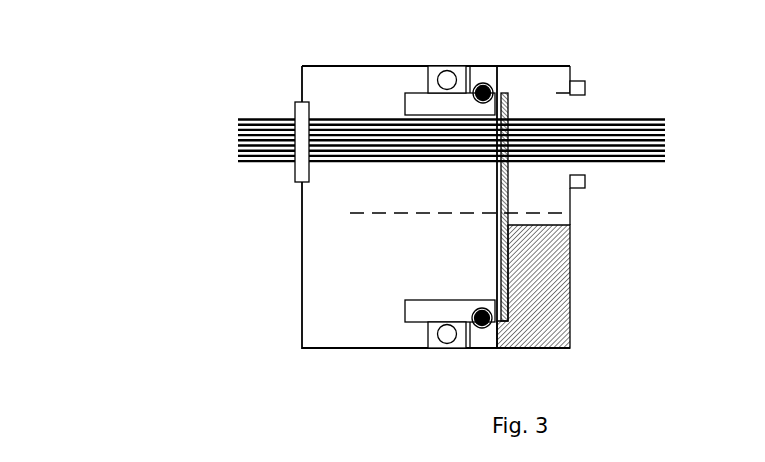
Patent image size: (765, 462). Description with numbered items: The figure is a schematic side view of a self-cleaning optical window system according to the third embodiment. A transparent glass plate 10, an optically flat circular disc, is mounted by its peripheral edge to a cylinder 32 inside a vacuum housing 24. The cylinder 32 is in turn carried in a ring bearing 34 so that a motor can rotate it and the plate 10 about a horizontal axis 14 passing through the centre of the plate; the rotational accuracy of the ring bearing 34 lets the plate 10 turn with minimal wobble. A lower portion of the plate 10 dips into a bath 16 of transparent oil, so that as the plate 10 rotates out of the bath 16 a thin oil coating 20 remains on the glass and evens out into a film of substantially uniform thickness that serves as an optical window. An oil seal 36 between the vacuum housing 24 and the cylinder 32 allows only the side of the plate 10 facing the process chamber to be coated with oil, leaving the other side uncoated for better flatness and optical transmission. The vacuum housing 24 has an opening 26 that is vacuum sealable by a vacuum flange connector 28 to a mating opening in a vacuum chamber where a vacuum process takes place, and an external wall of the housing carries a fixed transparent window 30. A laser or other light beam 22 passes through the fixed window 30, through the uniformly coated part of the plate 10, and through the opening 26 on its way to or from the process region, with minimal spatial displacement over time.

The transparent glass plate 10 is at (511, 99).
The horizontal axis 14 is at (368, 217).
The bath of transparent oil 16 is at (530, 332).
The oil coating 20 is at (512, 194).
The light beam 22 is at (667, 141).
The vacuum housing 24 is at (516, 64).
The opening 26 is at (589, 167).
The vacuum flange connector 28 is at (588, 88).
The fixed transparent window 30 is at (297, 172).
The cylinder 32 is at (430, 109).
The ring bearing 34 is at (428, 85).
The oil seal 36 is at (473, 99).